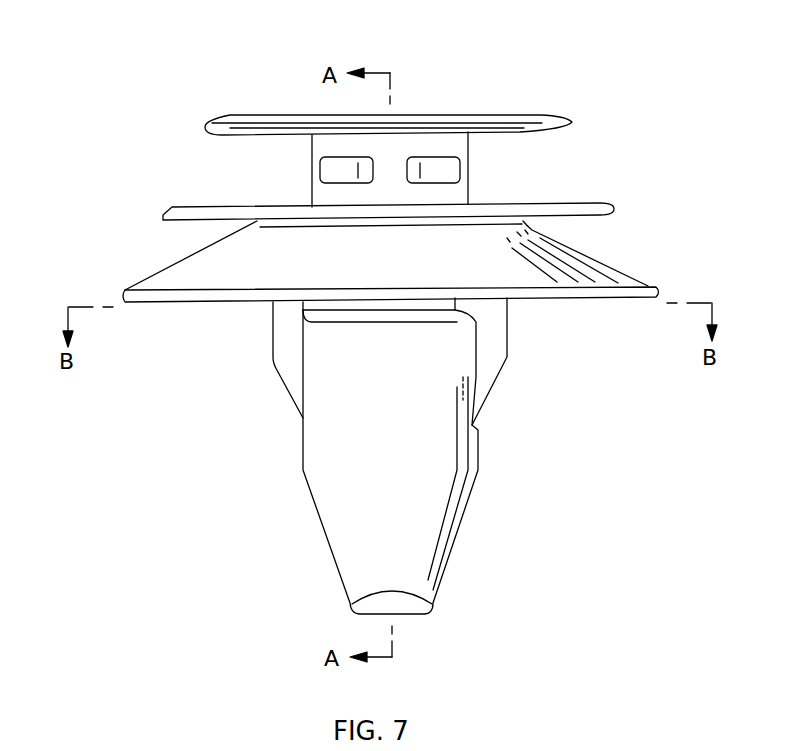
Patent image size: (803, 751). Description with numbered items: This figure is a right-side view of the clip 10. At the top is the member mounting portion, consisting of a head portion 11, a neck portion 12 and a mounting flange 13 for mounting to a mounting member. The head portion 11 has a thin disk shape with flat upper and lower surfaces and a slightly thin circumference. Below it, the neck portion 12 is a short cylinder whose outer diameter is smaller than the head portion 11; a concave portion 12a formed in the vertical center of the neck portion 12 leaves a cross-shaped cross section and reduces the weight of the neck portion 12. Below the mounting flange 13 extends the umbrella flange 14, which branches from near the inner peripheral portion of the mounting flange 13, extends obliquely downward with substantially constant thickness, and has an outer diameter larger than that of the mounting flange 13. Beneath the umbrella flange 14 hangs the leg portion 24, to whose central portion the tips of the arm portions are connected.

The clip 10 is at (615, 105).
The head portion 11 is at (230, 115).
The neck portion 12 is at (468, 143).
The concave portion 12a is at (452, 168).
The mounting flange 13 is at (590, 202).
The umbrella flange 14 is at (156, 279).
The leg portion 24 is at (407, 508).